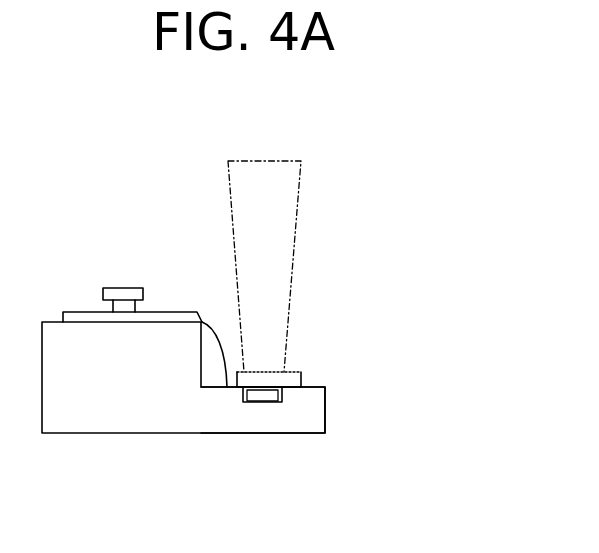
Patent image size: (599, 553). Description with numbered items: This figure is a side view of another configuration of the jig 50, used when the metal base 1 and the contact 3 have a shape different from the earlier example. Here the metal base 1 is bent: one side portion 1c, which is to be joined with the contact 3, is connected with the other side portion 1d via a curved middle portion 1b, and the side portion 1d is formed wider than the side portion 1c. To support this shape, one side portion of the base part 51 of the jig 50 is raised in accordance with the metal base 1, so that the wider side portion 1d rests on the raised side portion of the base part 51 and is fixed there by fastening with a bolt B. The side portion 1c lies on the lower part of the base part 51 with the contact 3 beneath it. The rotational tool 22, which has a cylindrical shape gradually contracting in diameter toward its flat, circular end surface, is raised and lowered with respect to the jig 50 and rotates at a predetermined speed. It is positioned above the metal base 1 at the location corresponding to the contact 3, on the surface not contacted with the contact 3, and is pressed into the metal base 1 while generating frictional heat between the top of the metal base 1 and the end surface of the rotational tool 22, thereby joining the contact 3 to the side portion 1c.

The metal base 1 is at (302, 369).
The curved middle portion 1b is at (215, 337).
The side portion 1c is at (243, 378).
The side portion 1d is at (82, 315).
The bolt B is at (118, 298).
The contact 3 is at (267, 397).
The rotational tool 22 is at (293, 222).
The jig 50 is at (330, 415).
The base part 51 is at (290, 423).